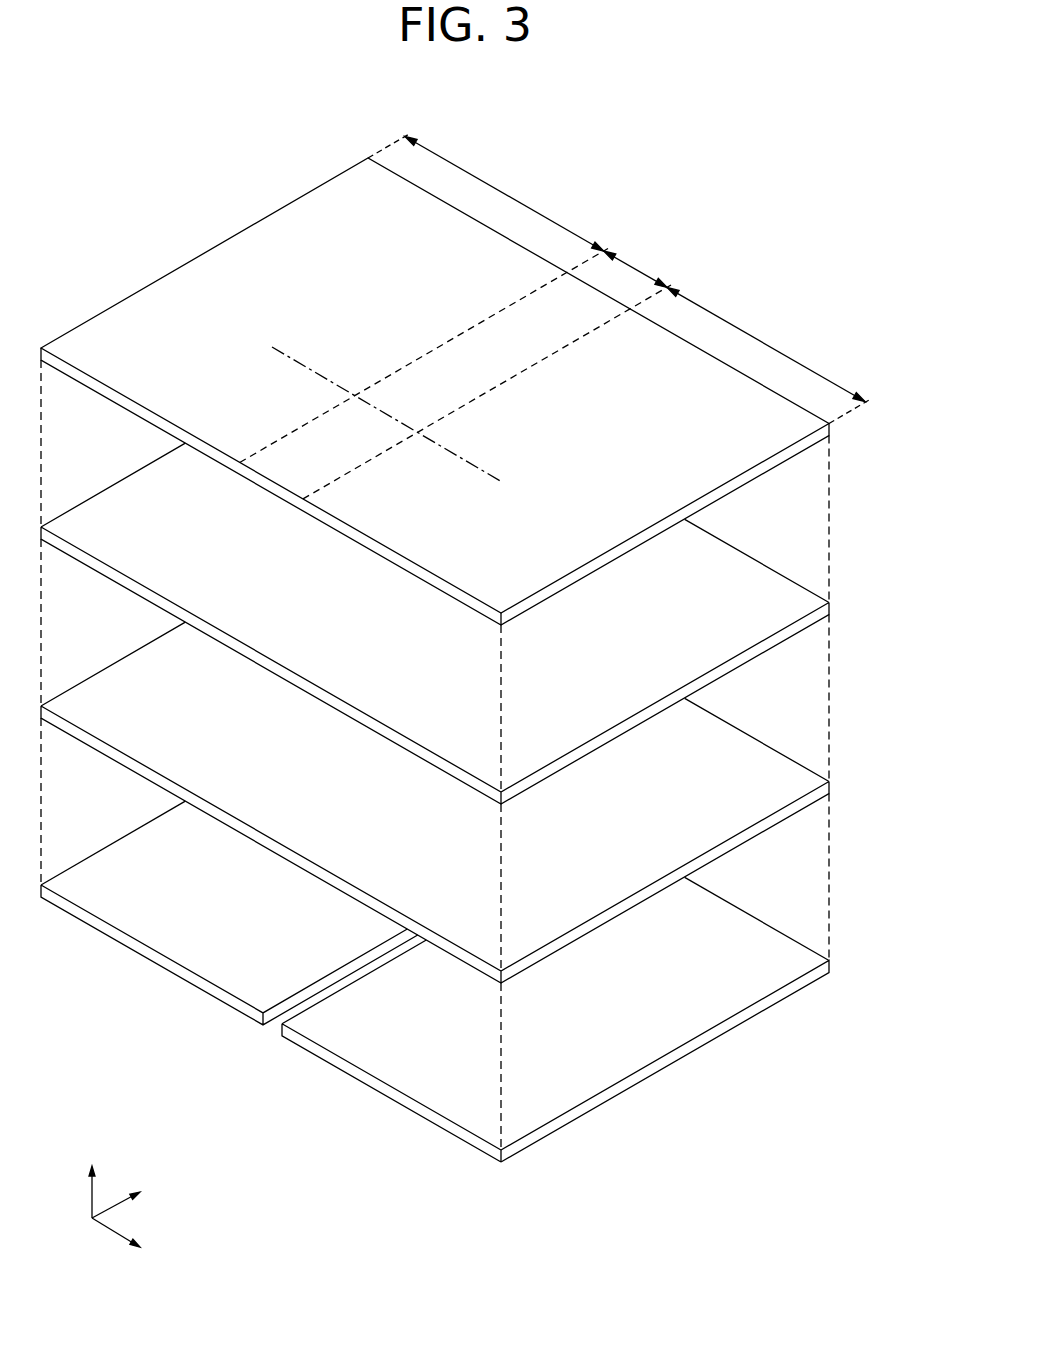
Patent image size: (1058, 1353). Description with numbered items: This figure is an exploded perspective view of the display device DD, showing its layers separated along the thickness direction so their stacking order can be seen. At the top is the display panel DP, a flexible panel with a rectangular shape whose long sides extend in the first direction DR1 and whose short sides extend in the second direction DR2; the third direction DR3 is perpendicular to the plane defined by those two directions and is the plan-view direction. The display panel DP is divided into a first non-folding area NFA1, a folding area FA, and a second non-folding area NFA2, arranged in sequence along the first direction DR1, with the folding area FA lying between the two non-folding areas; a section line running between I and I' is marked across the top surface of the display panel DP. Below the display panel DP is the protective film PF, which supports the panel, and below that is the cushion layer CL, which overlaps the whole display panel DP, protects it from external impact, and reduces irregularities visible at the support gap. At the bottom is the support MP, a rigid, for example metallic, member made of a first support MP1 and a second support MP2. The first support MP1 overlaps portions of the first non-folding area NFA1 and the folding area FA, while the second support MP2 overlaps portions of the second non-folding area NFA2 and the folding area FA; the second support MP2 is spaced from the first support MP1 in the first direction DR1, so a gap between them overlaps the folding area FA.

The display device DD is at (725, 222).
The display panel DP is at (832, 430).
The protective film PF is at (832, 608).
The cushion layer CL is at (832, 787).
The support MP is at (475, 981).
The first support MP1 is at (194, 978).
The second support MP2 is at (399, 1098).
The first non-folding area NFA1 is at (486, 193).
The folding area FA is at (455, 373).
The second non-folding area NFA2 is at (768, 355).
The section line I is at (366, 414).
The section line I' is at (480, 501).
The first direction DR1 is at (140, 1243).
The second direction DR2 is at (140, 1197).
The third direction DR3 is at (92, 1180).